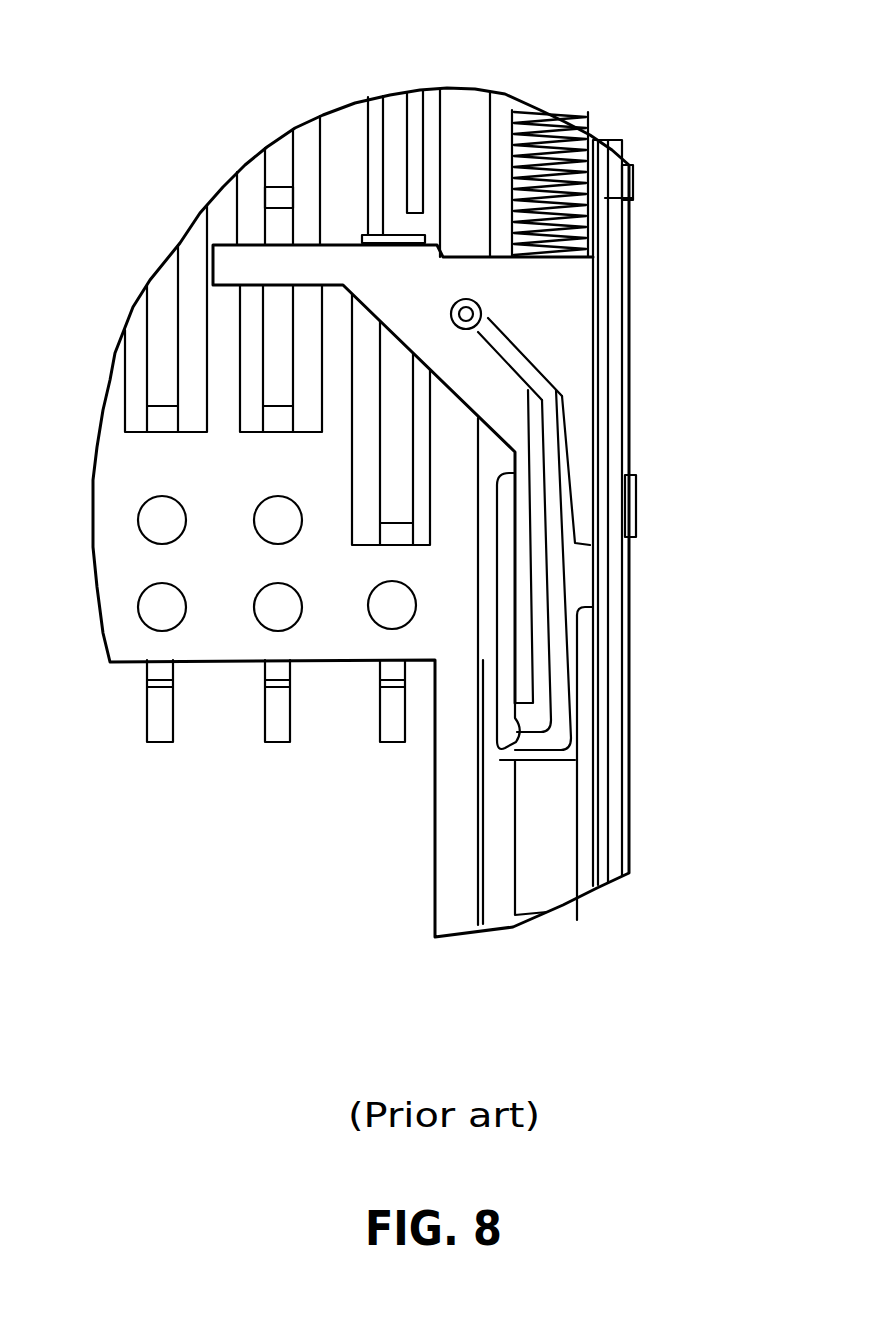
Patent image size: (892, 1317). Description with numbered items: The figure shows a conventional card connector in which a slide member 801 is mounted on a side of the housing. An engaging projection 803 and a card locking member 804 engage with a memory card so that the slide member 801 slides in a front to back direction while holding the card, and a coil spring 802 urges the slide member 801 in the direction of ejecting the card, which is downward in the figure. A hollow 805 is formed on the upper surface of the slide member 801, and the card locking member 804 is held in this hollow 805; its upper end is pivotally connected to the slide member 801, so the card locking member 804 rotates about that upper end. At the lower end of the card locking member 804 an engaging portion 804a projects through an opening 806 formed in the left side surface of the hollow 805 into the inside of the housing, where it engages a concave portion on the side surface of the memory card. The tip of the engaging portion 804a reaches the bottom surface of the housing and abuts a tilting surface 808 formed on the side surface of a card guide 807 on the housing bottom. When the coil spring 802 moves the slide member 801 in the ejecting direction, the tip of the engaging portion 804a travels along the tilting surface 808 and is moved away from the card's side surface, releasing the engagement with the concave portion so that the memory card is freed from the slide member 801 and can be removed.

The slide member 801 is at (548, 342).
The coil spring 802 is at (567, 120).
The engaging projection 803 is at (368, 263).
The card locking member 804 is at (550, 443).
The engaging portion 804a is at (518, 760).
The hollow 805 is at (537, 567).
The opening 806 is at (510, 718).
The card guide 807 is at (493, 897).
The tilting surface 808 is at (497, 597).